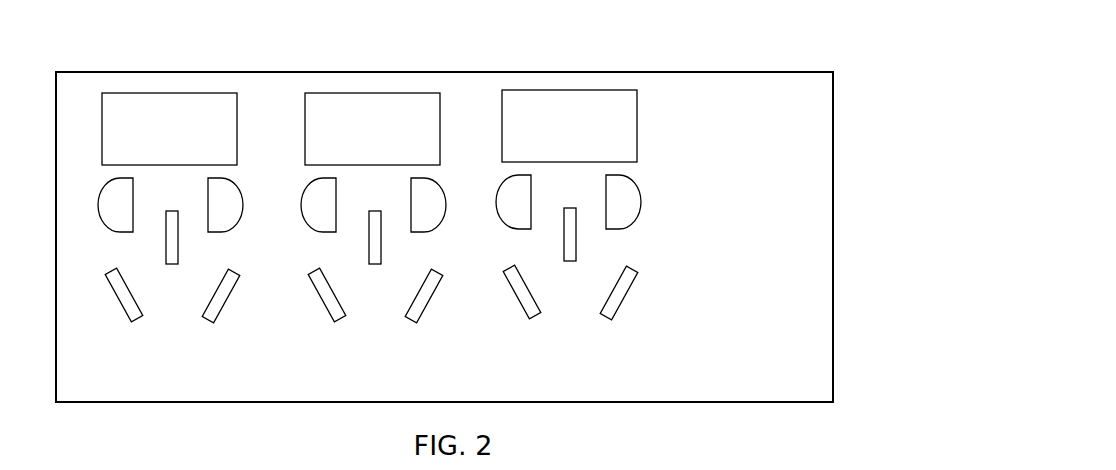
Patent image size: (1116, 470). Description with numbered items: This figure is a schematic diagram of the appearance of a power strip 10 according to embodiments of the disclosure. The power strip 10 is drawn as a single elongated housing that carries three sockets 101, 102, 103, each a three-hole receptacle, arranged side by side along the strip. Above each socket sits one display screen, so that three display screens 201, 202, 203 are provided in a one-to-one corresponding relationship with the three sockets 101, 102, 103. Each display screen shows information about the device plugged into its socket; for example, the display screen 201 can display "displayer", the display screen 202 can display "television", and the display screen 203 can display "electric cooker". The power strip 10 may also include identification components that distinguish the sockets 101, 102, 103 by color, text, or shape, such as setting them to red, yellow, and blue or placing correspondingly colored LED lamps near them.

The power strip 10 is at (732, 72).
The socket 101 is at (156, 382).
The socket 102 is at (359, 382).
The socket 103 is at (554, 382).
The display screen 201 is at (154, 150).
The display screen 202 is at (357, 150).
The display screen 203 is at (554, 148).